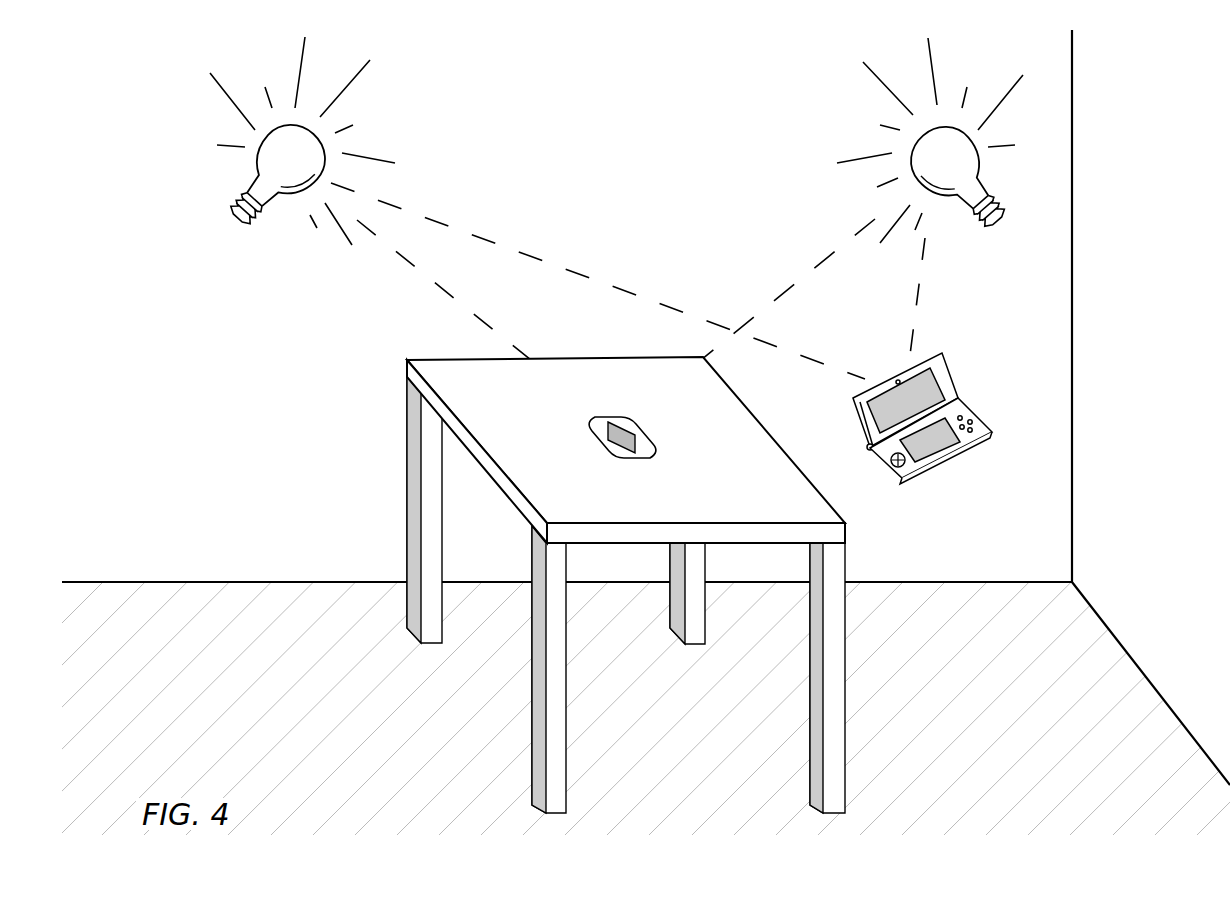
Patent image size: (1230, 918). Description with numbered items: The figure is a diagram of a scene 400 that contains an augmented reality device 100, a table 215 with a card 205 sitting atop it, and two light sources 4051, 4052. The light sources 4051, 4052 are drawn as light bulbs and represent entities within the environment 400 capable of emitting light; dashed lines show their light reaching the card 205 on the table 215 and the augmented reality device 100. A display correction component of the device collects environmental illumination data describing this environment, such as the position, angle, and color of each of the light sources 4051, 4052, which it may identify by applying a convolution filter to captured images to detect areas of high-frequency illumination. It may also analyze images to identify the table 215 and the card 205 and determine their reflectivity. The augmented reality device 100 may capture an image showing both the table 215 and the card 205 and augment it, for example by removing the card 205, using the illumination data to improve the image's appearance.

The scene 400 is at (650, 78).
The light source 4051 is at (255, 227).
The light source 4052 is at (975, 227).
The table 215 is at (452, 380).
The card 205 is at (628, 460).
The augmented reality device 100 is at (957, 468).